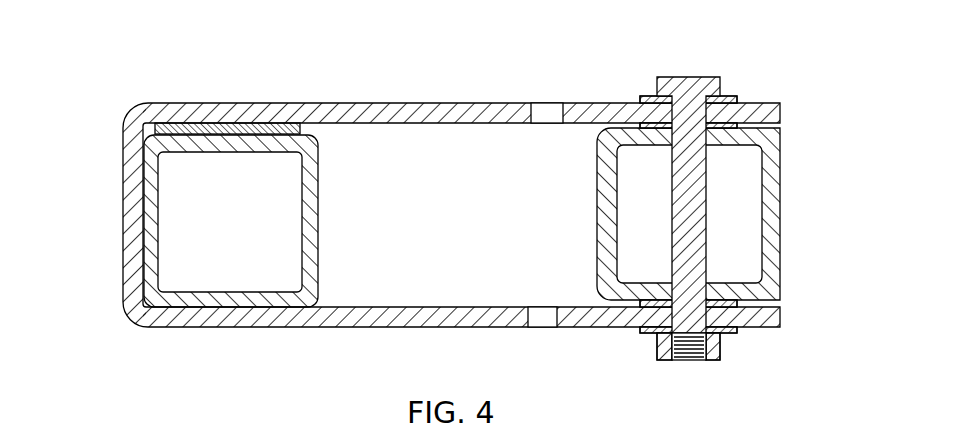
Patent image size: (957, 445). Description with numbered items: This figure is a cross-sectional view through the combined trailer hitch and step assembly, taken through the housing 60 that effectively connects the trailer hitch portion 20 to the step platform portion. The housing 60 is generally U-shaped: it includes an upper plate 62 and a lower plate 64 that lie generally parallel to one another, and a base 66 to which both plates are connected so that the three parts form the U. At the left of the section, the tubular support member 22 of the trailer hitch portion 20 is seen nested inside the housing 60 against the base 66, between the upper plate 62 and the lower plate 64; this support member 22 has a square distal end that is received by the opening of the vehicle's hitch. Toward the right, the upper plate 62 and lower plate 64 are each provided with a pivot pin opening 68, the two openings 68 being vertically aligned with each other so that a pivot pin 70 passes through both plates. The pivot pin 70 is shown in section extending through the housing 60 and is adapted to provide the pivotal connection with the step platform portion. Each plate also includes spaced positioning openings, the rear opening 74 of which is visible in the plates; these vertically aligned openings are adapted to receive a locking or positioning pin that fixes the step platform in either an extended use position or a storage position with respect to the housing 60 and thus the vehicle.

The trailer hitch portion 20 is at (284, 215).
The tubular support member 22 is at (315, 192).
The housing 60 is at (412, 214).
The upper plate 62 is at (348, 117).
The lower plate 64 is at (347, 325).
The base 66 is at (128, 238).
The pivot pin opening 68 is at (763, 103).
The pivot pin 70 is at (697, 217).
The rear positioning opening 74 is at (558, 322).